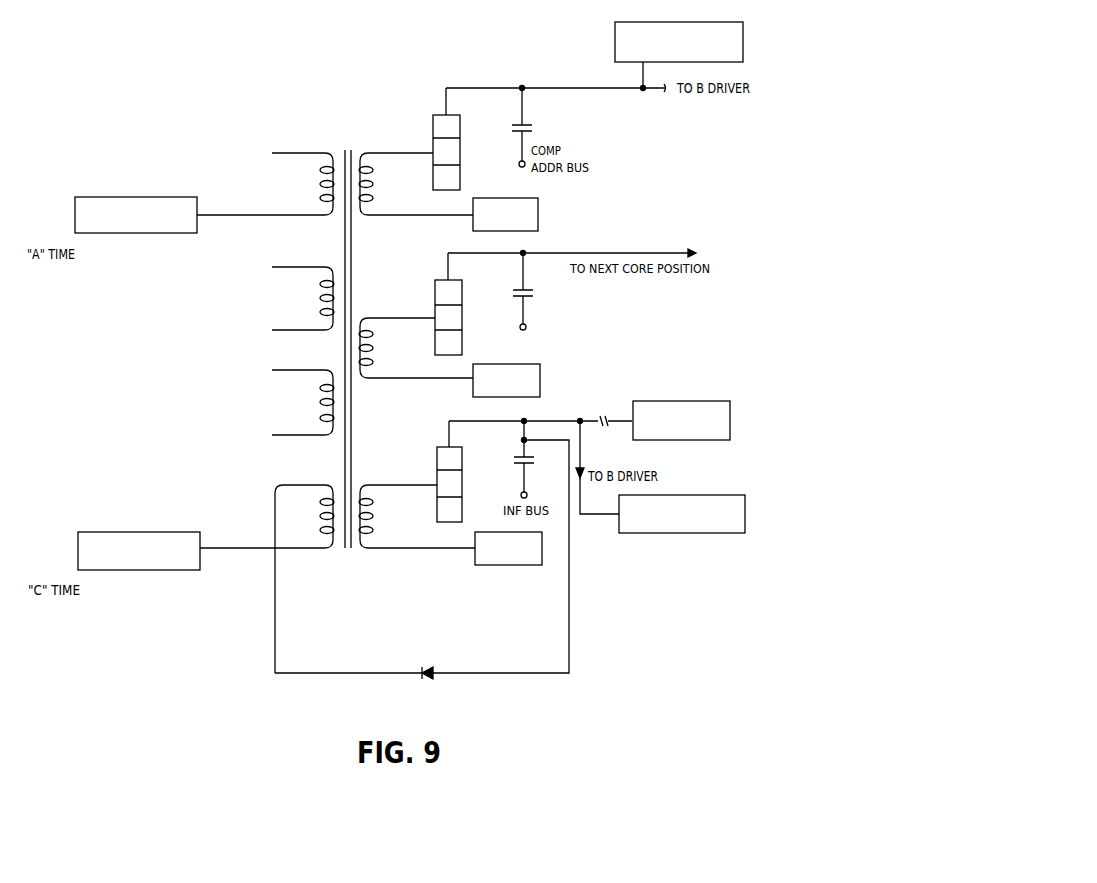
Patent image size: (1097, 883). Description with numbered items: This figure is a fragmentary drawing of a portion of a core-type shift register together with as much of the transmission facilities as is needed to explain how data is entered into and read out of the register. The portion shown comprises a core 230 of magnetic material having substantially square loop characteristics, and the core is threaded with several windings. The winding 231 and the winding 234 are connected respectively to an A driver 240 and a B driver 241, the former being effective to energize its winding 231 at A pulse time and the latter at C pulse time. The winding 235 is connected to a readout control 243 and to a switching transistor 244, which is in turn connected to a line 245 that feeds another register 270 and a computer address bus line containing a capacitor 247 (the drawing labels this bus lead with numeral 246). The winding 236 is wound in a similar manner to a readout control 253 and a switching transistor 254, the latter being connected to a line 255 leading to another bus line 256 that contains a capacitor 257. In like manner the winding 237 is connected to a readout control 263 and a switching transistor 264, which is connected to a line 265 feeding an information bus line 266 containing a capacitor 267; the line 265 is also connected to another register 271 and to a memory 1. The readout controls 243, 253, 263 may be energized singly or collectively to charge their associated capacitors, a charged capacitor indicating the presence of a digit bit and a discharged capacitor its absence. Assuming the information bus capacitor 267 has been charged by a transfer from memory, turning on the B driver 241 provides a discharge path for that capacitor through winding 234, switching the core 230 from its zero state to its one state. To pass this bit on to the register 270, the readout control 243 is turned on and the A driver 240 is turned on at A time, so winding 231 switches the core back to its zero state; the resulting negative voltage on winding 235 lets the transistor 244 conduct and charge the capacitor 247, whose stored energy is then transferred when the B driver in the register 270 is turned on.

The memory 1 is at (672, 403).
The core 230 is at (350, 150).
The winding 231 is at (322, 185).
The winding 234 is at (324, 515).
The winding 235 is at (373, 186).
The winding 236 is at (373, 348).
The winding 237 is at (373, 516).
The A driver 240 is at (170, 197).
The B driver 241 is at (152, 531).
The readout control 243 is at (537, 214).
The switching transistor 244 is at (438, 117).
The line 245 is at (480, 91).
The capacitor lead 246 is at (521, 116).
The capacitor 247 is at (533, 130).
The readout control 253 is at (539, 378).
The switching transistor 254 is at (452, 284).
The line 255 is at (574, 258).
The bus line 256 is at (522, 278).
The capacitor 257 is at (534, 295).
The readout control 263 is at (512, 571).
The switching transistor 264 is at (440, 457).
The line 265 is at (478, 421).
The information bus line 266 is at (526, 431).
The capacitor 267 is at (508, 474).
The register 270 is at (614, 38).
The register 271 is at (717, 500).